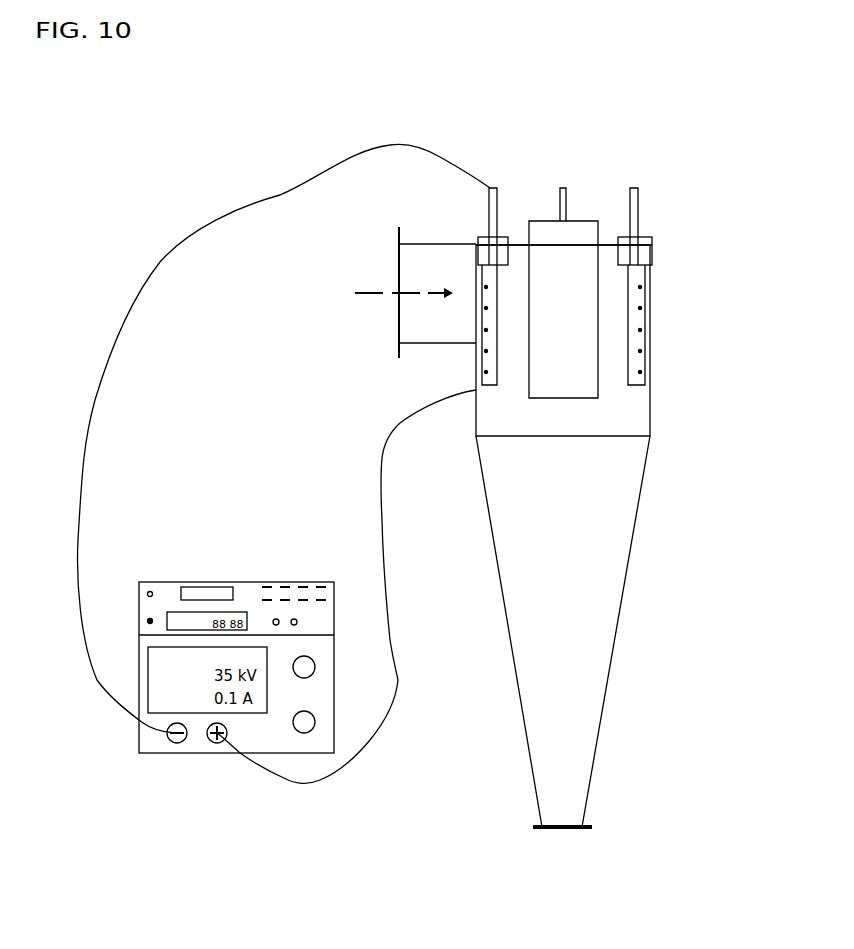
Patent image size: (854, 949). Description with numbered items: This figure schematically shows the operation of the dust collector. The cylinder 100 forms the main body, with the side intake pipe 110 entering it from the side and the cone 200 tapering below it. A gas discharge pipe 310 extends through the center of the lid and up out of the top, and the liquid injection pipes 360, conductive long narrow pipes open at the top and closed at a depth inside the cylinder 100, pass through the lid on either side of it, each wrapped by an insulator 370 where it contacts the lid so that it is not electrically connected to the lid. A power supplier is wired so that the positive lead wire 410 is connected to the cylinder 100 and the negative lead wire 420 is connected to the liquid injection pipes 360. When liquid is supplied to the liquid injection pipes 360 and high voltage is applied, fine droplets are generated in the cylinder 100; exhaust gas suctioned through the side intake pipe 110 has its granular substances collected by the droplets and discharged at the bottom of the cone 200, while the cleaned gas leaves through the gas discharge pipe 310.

The cylinder 100 is at (652, 403).
The side intake pipe 110 is at (437, 345).
The cone 200 is at (610, 673).
The gas discharge pipe 310 is at (598, 221).
The liquid injection pipe 360 is at (640, 213).
The insulator 370 is at (652, 237).
The positive lead wire 410 is at (393, 445).
The negative lead wire 420 is at (378, 147).